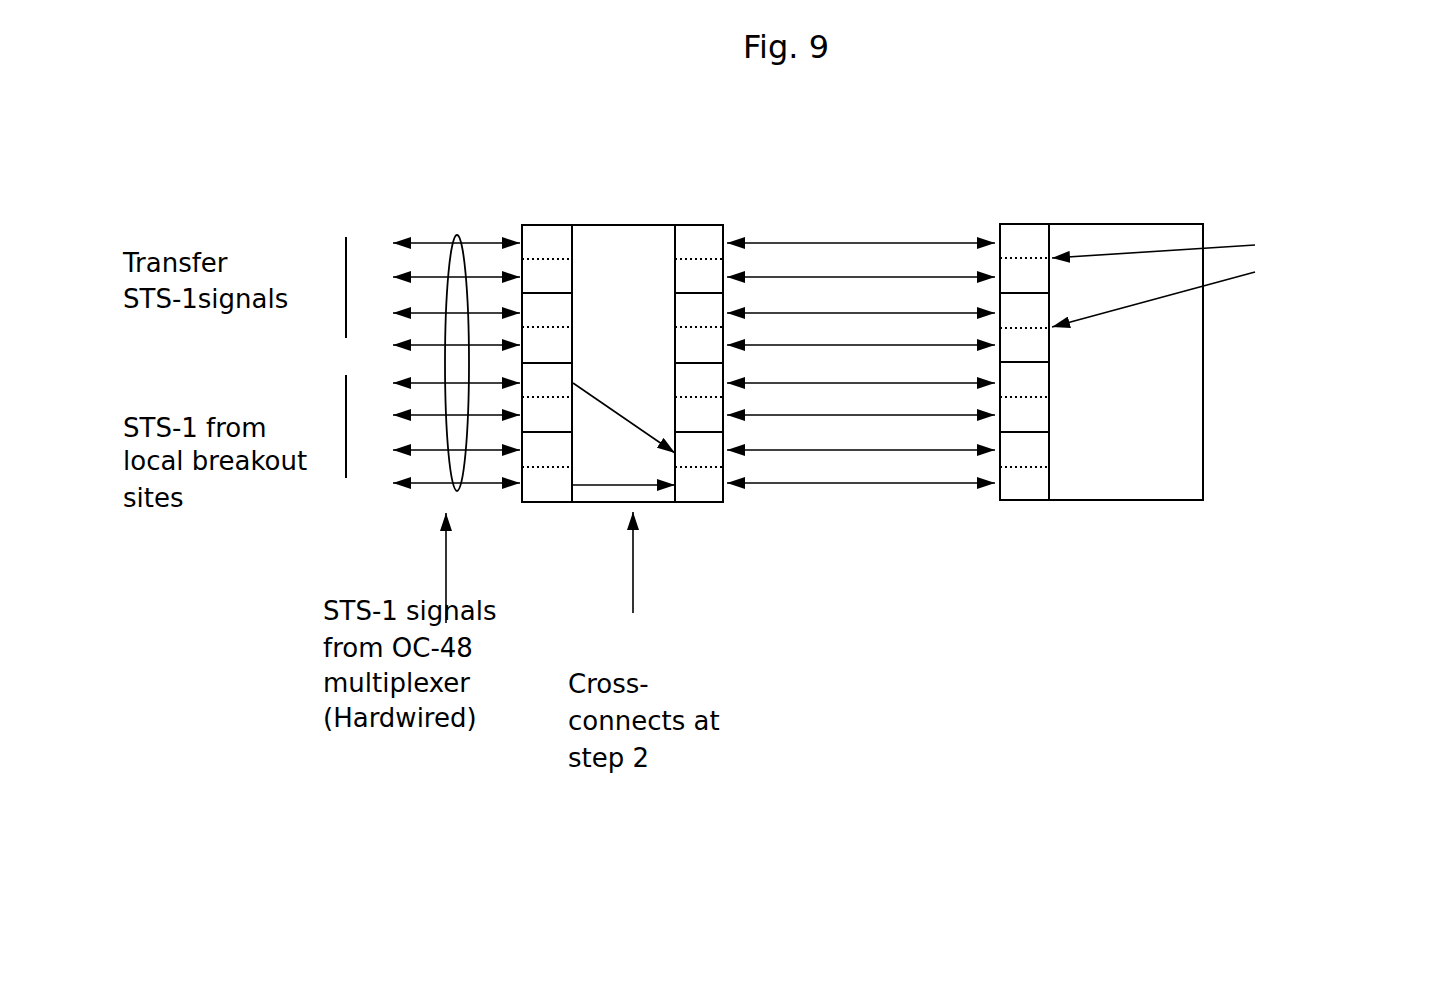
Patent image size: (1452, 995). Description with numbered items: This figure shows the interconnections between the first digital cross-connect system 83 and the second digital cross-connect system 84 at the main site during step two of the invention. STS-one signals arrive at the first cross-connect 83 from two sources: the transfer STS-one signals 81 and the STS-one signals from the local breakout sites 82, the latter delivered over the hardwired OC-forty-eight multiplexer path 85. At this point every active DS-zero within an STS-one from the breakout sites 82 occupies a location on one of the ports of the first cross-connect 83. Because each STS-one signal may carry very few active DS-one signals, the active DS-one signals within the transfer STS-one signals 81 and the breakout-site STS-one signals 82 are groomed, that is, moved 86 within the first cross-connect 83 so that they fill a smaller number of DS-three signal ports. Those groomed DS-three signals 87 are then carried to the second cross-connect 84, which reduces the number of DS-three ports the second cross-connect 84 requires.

The transfer STS-1 signals 81 is at (342, 270).
The STS-1 signals from local breakout sites 82 is at (340, 467).
The DCS 3/1 cross-connect 83 is at (672, 224).
The DCS 1/0 cross-connect 84 is at (1153, 223).
The STS-1 signals from OC-48 multiplexer (hardwired) 85 is at (458, 487).
The moving of active DS1 signals 86 is at (635, 433).
The transfer DS3 signals 87 is at (1292, 292).